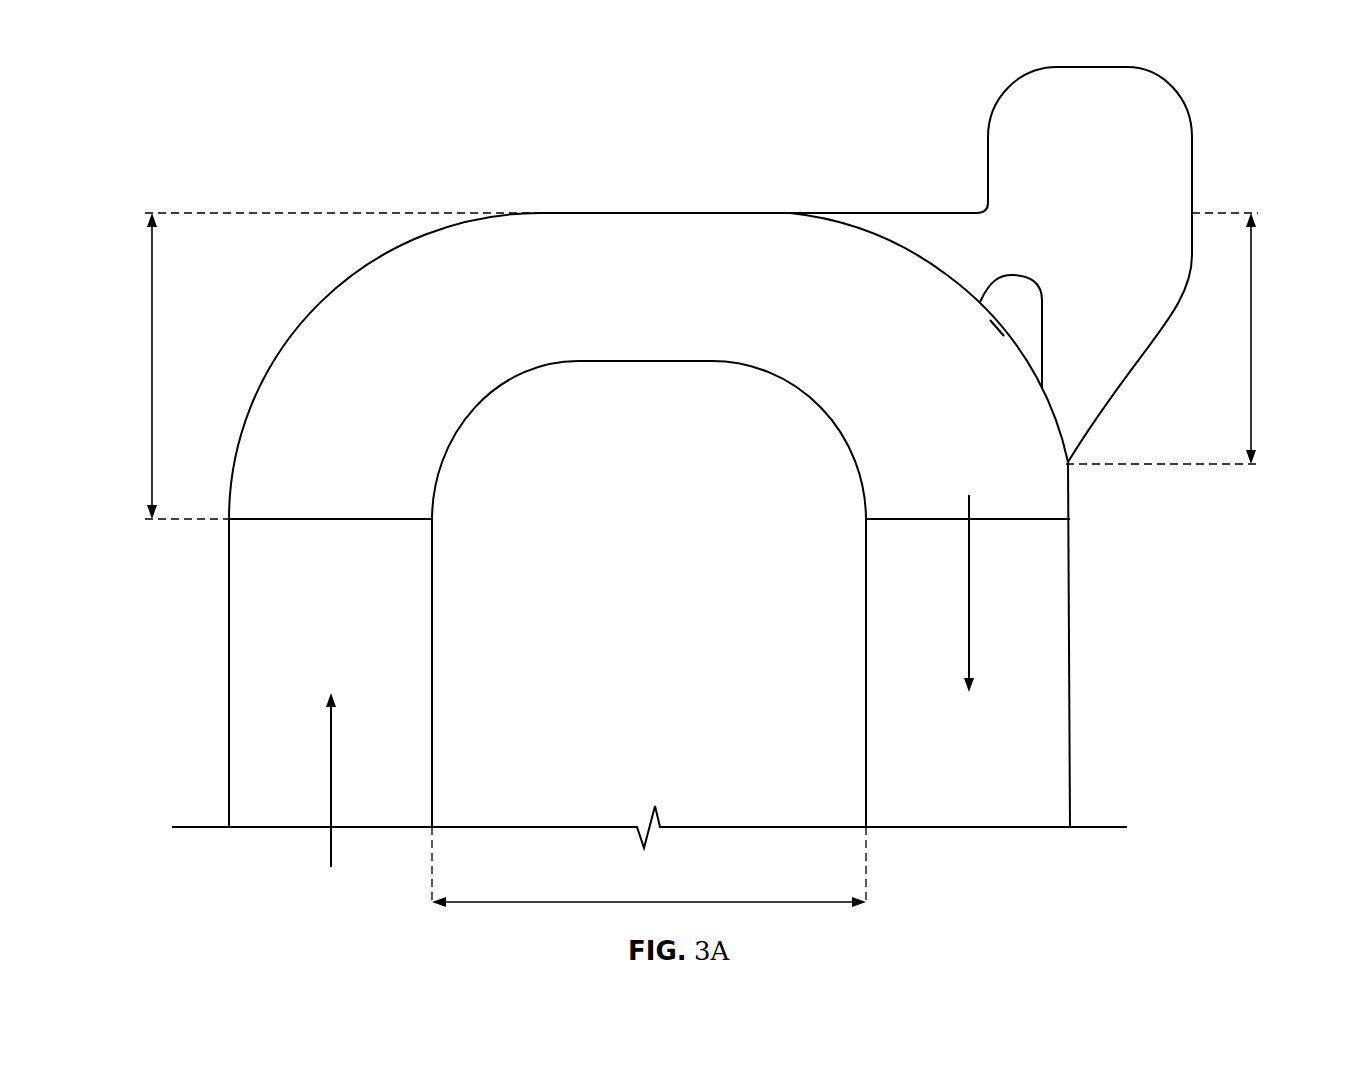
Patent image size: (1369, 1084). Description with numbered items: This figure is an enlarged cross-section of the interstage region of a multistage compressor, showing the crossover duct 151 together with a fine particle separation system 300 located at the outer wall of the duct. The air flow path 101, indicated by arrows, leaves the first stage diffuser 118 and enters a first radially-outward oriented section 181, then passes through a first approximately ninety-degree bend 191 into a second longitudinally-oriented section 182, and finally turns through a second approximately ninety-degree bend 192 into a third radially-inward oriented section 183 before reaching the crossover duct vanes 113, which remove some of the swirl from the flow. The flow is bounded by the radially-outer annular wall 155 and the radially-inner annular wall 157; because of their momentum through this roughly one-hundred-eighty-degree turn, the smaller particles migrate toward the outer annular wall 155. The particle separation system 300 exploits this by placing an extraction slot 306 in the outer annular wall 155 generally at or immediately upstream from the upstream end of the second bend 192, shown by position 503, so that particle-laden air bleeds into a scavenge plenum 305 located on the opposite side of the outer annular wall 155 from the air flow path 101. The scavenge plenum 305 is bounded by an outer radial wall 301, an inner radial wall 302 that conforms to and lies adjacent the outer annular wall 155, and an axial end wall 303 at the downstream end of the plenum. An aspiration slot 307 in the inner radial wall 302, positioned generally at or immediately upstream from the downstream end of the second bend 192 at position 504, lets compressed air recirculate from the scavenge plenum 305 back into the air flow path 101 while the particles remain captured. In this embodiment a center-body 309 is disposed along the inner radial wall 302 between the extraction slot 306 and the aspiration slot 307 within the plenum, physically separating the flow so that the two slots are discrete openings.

The fine particle separation system 300 is at (190, 96).
The crossover duct 151 is at (691, 105).
The position 503 is at (736, 204).
The outer radial wall 301 is at (947, 212).
The scavenge plenum 305 is at (1112, 173).
The extraction slot 306 is at (864, 242).
The center-body 309 is at (1028, 278).
The second approximately 90-degree bend 192 is at (938, 286).
The outer annular wall 155 is at (297, 327).
The first approximately 90-degree bend 191 is at (357, 287).
The inner radial wall 302 is at (998, 327).
The axial end wall 303 is at (1194, 196).
The third radially-inward oriented section 183 is at (1251, 325).
The first radially-outward oriented section 181 is at (152, 368).
The inner annular wall 157 is at (473, 413).
The aspiration slot 307 is at (1042, 430).
The position 504 is at (1081, 490).
The diffuser 118 is at (352, 627).
The crossover duct vanes 113 is at (990, 769).
The air flow path 101 is at (331, 734).
The second longitudinally-oriented section 182 is at (652, 901).